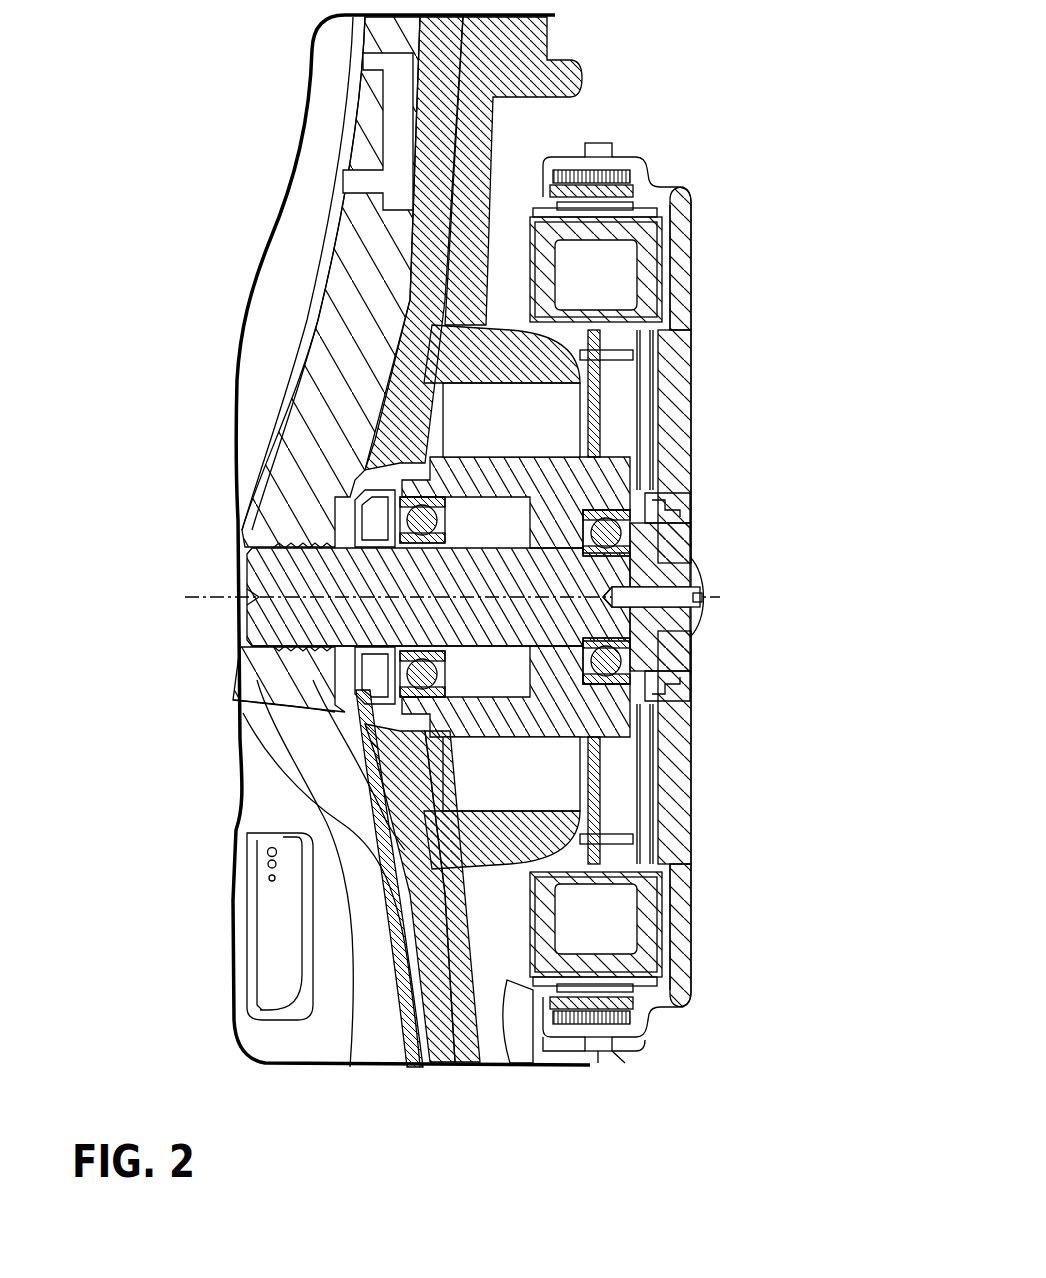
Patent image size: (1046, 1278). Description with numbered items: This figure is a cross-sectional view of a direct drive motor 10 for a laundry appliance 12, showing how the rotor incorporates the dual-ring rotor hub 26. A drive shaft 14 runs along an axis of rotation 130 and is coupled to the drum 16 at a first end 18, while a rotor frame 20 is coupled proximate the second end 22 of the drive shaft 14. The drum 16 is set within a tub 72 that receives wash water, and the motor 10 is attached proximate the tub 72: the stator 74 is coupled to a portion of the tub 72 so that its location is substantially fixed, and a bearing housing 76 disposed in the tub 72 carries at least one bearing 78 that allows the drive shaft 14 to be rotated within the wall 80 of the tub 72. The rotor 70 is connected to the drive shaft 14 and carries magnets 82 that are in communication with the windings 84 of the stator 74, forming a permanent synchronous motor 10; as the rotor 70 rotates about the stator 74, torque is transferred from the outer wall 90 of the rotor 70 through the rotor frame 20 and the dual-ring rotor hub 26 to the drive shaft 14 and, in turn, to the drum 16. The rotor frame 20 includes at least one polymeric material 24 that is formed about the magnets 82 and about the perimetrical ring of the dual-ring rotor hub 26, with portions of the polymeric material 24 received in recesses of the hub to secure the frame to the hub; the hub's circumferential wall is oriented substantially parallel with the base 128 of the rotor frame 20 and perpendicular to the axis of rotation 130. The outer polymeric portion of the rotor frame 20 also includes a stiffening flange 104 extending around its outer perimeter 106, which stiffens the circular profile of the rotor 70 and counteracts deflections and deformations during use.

The motor 10 is at (706, 135).
The appliance 12 is at (171, 104).
The drive shaft 14 is at (294, 540).
The drum 16 is at (315, 370).
The first end 18 is at (257, 628).
The rotor frame 20 is at (708, 265).
The second end 22 is at (705, 605).
The polymeric material 24 is at (675, 457).
The dual-ring rotor hub 26 is at (697, 543).
The rotor 70 is at (690, 1012).
The tub 72 is at (447, 1058).
The stator 74 is at (664, 242).
The bearing housing 76 is at (368, 484).
The bearing 78 is at (367, 717).
The wall 80 is at (392, 811).
The magnets 82 is at (612, 173).
The windings 84 is at (512, 1040).
The outer wall 90 is at (620, 1040).
The stiffening flange 104 is at (595, 143).
The outer perimeter 106 is at (633, 167).
The base 128 is at (694, 340).
The axis of rotation 130 is at (205, 597).